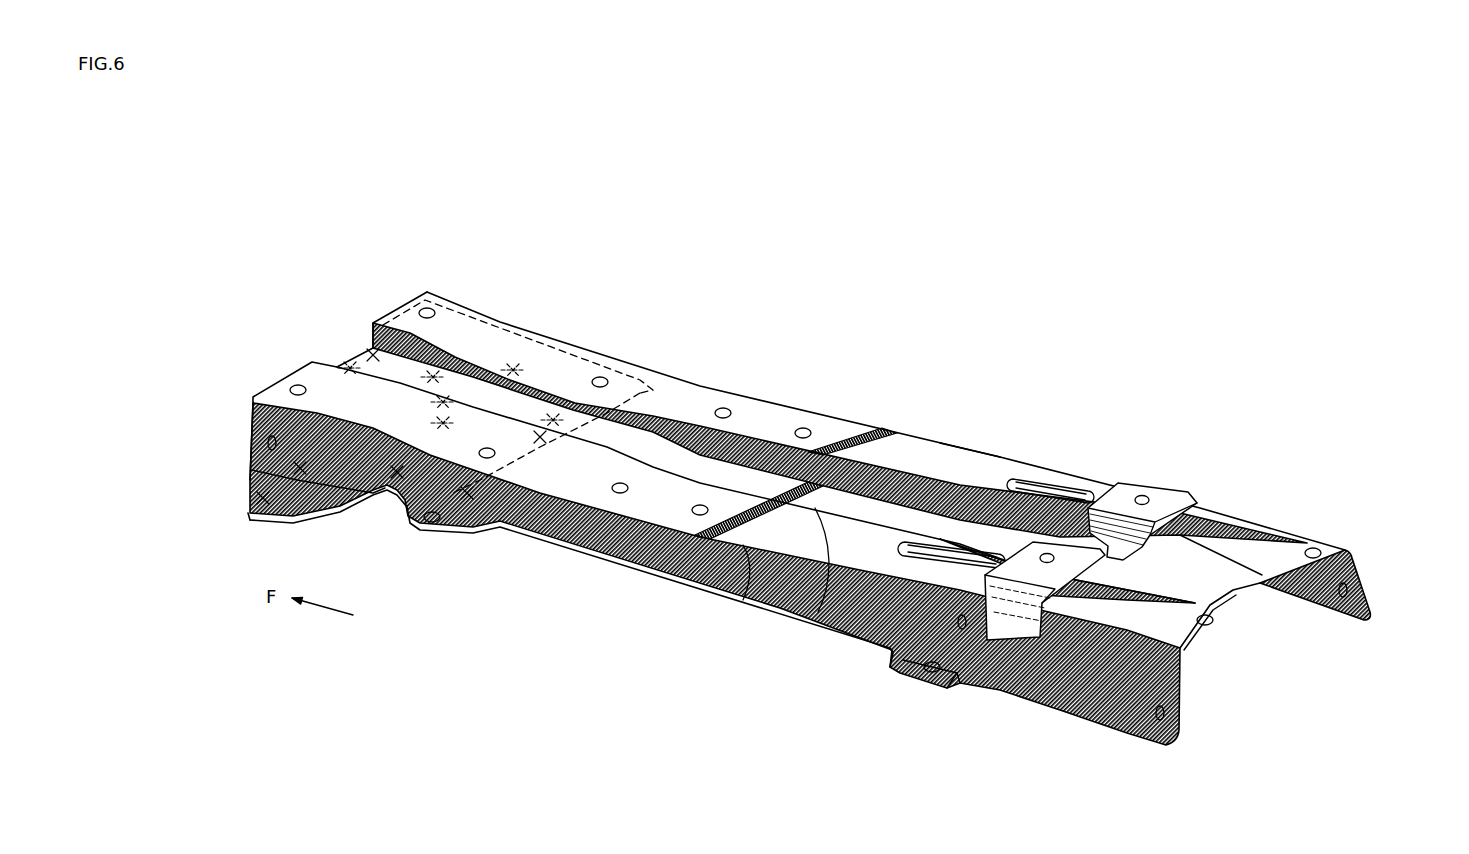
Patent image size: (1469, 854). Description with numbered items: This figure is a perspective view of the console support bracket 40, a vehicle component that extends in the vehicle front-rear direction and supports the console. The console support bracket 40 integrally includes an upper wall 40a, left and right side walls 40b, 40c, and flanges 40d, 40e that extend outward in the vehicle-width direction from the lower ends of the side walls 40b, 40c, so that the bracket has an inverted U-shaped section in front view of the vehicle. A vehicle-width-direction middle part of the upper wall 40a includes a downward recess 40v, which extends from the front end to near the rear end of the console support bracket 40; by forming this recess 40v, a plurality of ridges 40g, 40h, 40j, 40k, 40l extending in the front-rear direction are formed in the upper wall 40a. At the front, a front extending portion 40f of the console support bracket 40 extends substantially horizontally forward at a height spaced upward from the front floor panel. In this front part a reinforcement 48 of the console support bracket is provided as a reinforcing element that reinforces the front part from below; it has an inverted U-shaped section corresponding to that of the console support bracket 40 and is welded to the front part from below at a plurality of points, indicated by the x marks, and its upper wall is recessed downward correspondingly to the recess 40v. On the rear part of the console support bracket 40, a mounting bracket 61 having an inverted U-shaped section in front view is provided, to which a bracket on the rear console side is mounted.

The console support bracket 40 is at (843, 410).
The upper wall 40a is at (703, 400).
The left side wall 40b is at (634, 551).
The right side wall 40c is at (1298, 598).
The flange 40d is at (548, 546).
The flange 40e is at (1373, 618).
The front extending portion 40f is at (573, 347).
The ridge 40g is at (729, 596).
The ridge 40h is at (818, 607).
The ridge 40j is at (742, 508).
The ridge 40k is at (757, 442).
The ridge 40l is at (957, 448).
The recess 40v is at (885, 508).
The reinforcement of the console support bracket 48 is at (505, 462).
The mounting bracket 61 is at (1122, 488).